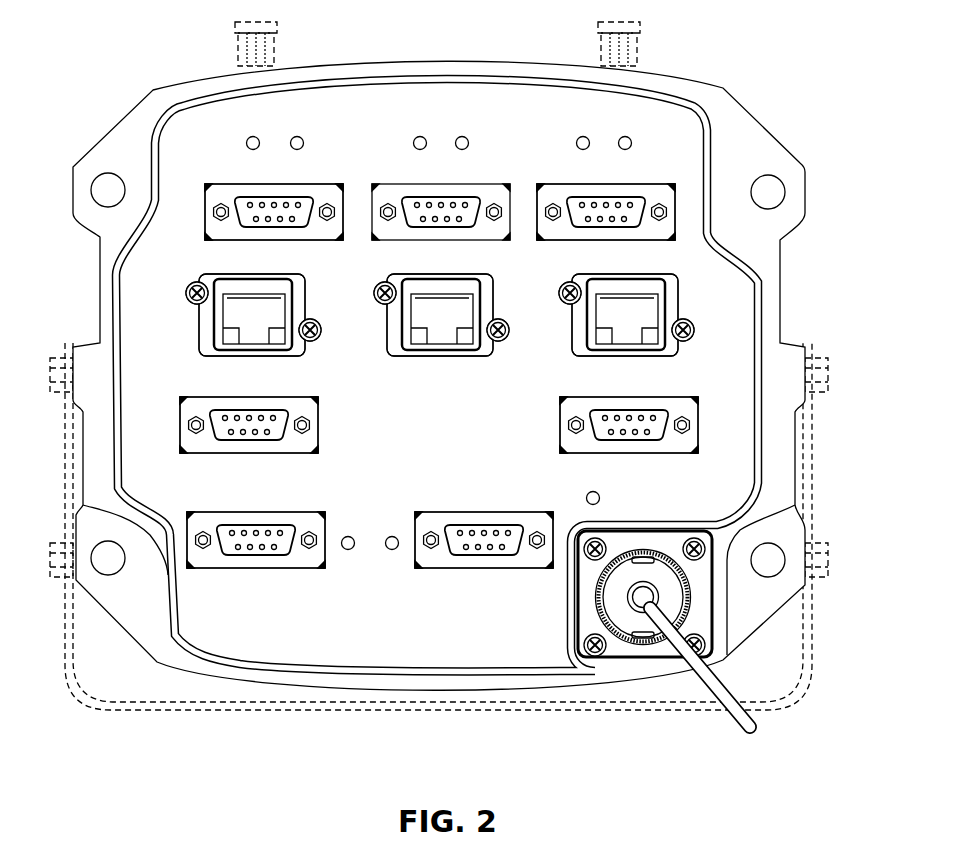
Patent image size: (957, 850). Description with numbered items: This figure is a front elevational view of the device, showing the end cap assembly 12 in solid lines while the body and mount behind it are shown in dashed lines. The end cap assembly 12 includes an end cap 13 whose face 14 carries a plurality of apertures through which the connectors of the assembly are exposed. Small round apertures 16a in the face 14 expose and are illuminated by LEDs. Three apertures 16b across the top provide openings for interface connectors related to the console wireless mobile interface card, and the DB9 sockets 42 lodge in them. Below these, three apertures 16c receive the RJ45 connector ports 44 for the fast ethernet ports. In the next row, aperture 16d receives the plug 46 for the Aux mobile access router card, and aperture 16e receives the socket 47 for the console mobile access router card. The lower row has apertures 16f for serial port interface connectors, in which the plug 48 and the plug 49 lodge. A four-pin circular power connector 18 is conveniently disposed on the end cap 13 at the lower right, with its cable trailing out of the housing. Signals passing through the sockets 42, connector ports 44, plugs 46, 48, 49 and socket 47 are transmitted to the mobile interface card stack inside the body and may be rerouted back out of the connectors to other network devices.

The end cap assembly 12 is at (730, 78).
The end cap 13 is at (142, 259).
The face 14 is at (437, 100).
The apertures 16a is at (462, 136).
The apertures 16b is at (340, 184).
The apertures 16c is at (207, 276).
The apertures 16d is at (316, 397).
The aperture 16e is at (562, 397).
The apertures 16f is at (323, 513).
The power connector 18 is at (624, 678).
The sockets 42 is at (232, 193).
The connector ports 44 is at (287, 288).
The plug 46 is at (307, 443).
The socket 47 is at (678, 407).
The plug 48 is at (300, 562).
The plug 49 is at (527, 560).